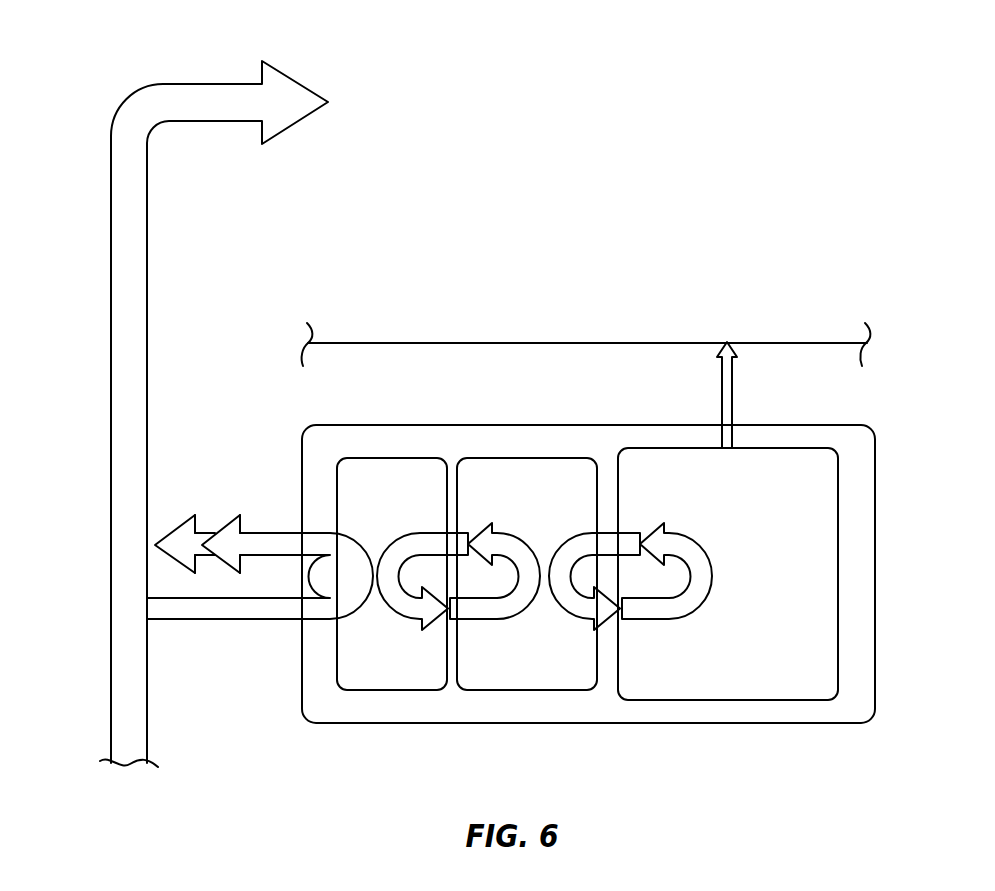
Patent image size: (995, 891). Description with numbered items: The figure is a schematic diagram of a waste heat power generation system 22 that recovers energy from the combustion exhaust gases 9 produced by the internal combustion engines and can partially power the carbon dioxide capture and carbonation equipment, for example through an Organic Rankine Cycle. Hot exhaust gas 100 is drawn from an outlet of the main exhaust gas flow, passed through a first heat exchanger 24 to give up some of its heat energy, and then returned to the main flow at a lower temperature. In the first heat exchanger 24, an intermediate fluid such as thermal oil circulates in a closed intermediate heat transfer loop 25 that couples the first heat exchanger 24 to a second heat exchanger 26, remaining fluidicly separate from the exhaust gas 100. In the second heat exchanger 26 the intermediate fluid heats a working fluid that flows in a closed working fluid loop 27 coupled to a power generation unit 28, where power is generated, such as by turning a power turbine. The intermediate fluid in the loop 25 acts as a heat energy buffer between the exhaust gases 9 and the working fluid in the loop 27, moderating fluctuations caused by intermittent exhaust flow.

The combustion exhaust gases 9 is at (111, 215).
The exhaust gas 100 is at (234, 621).
The waste heat power generation system 22 is at (875, 572).
The first heat exchanger 24 is at (392, 458).
The intermediate heat transfer loop 25 is at (418, 623).
The second heat exchanger 26 is at (528, 458).
The working fluid loop 27 is at (658, 622).
The power generation unit 28 is at (727, 700).